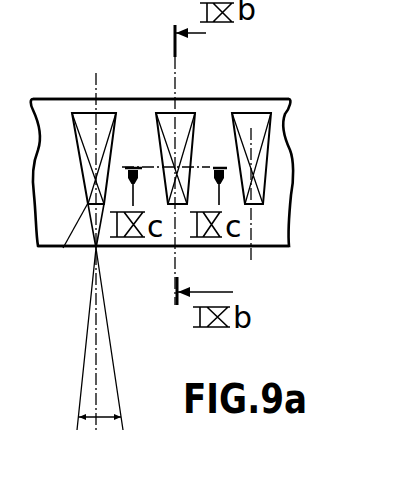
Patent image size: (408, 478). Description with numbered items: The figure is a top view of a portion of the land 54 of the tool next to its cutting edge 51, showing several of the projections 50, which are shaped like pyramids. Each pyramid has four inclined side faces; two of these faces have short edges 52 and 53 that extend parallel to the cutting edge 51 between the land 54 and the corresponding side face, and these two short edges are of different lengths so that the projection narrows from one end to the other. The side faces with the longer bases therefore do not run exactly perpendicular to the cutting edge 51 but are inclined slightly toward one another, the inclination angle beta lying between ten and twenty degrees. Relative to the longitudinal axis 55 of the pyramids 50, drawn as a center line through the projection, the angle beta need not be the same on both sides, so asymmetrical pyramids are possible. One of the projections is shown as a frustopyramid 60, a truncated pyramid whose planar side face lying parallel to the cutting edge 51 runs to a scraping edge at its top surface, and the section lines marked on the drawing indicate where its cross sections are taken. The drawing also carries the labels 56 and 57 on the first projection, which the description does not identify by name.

The projections 50 is at (93, 164).
The cutting edge 51 is at (277, 98).
The short edge 52 is at (82, 107).
The short edge 53 is at (63, 248).
The land 54 is at (264, 223).
The longitudinal axis 55 is at (98, 366).
The tapered bore 56 is at (109, 125).
The throat 57 is at (87, 203).
The frustopyramid 60 is at (248, 125).